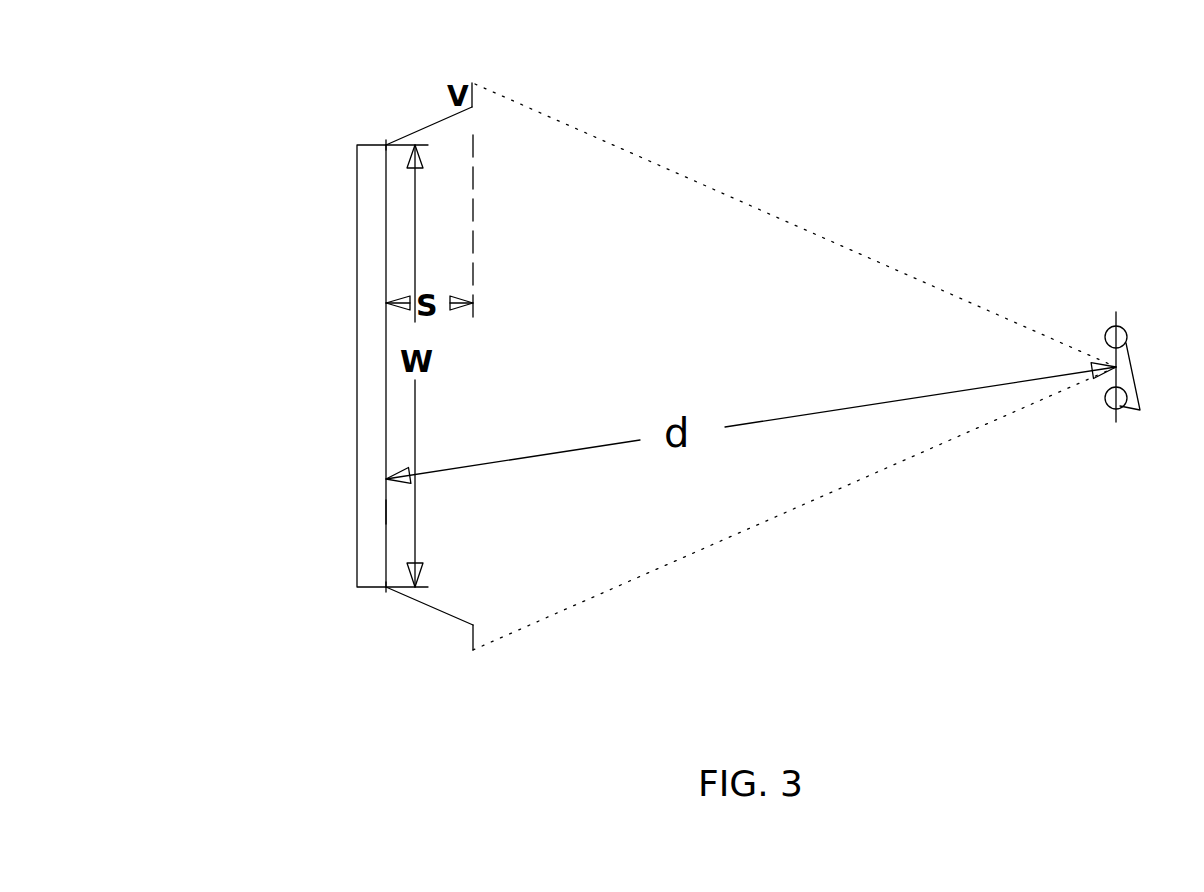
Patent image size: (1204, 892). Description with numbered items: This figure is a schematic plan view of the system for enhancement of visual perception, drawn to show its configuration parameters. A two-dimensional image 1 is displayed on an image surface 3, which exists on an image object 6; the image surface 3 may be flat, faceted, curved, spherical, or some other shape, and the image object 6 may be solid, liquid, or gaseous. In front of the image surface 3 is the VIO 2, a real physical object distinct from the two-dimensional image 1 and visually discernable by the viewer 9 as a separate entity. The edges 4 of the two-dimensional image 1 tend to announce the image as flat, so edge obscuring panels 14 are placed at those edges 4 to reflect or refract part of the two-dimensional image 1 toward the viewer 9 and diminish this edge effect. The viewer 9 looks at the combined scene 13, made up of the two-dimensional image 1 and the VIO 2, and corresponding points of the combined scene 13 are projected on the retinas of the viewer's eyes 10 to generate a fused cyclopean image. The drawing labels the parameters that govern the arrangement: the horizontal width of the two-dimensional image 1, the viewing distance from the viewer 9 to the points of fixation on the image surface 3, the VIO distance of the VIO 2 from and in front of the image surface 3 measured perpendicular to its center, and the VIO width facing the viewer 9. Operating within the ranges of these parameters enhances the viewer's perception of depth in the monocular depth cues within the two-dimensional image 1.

The 2D image 1 is at (386, 512).
The VIO 2 is at (472, 83).
The image surface 3 is at (386, 428).
The edges 4 is at (386, 145).
The image object 6 is at (357, 237).
The viewer 9 is at (1118, 312).
The eyes 10 is at (1141, 384).
The combined scene 13 is at (903, 273).
The edge obscuring panels 14 is at (448, 116).